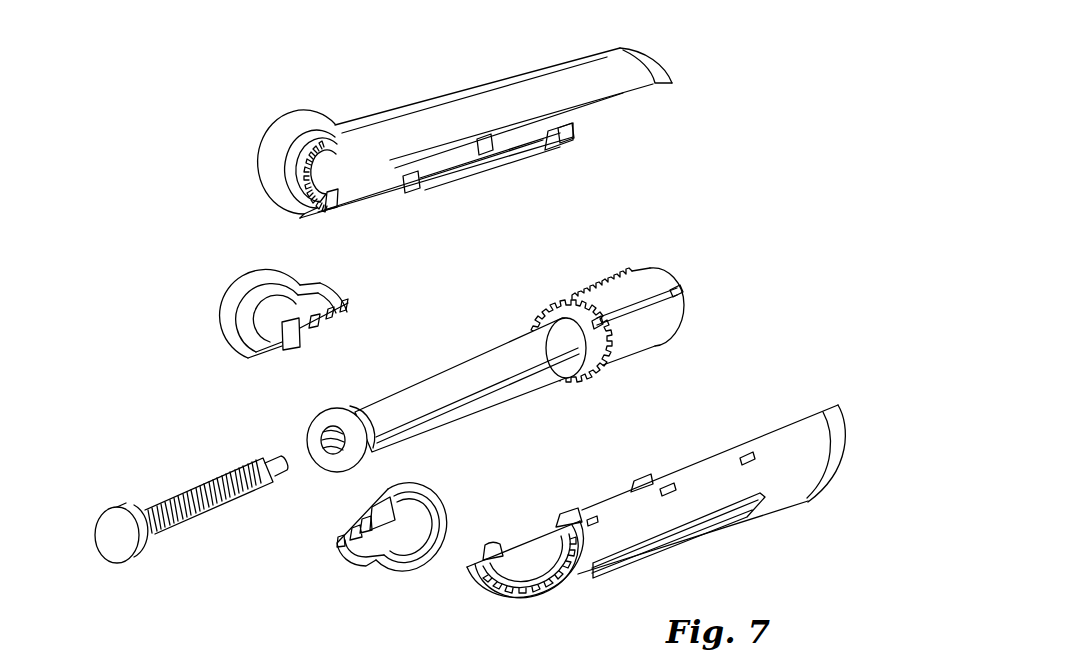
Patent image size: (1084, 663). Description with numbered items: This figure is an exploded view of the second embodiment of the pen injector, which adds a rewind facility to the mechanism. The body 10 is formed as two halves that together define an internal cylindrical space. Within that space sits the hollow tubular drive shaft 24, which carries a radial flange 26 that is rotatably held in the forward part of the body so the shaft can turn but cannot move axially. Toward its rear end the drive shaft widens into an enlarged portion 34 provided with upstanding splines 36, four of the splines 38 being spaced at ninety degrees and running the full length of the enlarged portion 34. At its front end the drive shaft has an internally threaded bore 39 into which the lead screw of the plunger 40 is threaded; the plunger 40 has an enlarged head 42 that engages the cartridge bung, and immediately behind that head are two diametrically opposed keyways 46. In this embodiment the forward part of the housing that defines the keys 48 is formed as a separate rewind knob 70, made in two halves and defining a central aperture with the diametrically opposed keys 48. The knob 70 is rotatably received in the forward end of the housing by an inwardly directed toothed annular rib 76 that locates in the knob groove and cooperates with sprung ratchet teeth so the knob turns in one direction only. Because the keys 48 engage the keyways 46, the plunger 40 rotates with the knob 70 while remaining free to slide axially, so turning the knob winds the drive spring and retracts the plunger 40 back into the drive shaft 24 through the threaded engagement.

The body 10 is at (618, 50).
The hollow tubular drive shaft 24 is at (468, 385).
The radial flange 26 is at (340, 408).
The enlarged portion 34 is at (657, 322).
The upstanding splines 36 is at (545, 313).
The splines 38 is at (682, 297).
The internally threaded bore 39 is at (331, 452).
The plunger 40 is at (223, 507).
The enlarged head 42 is at (127, 550).
The keyways 46 is at (243, 497).
The keys 48 is at (291, 351).
The rewind knob 70 is at (240, 328).
The toothed annular rib 76 is at (292, 200).